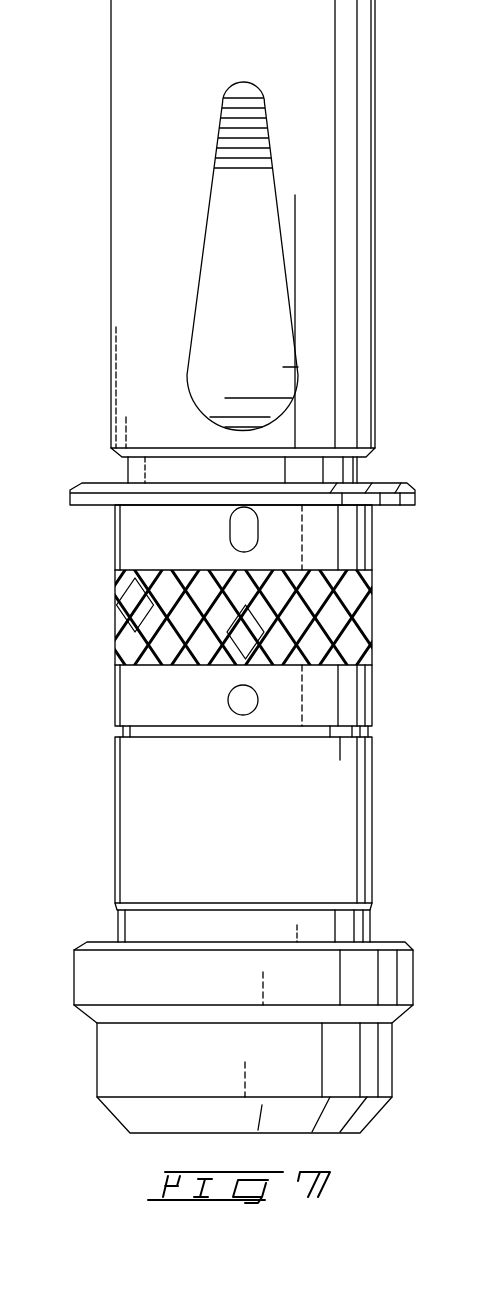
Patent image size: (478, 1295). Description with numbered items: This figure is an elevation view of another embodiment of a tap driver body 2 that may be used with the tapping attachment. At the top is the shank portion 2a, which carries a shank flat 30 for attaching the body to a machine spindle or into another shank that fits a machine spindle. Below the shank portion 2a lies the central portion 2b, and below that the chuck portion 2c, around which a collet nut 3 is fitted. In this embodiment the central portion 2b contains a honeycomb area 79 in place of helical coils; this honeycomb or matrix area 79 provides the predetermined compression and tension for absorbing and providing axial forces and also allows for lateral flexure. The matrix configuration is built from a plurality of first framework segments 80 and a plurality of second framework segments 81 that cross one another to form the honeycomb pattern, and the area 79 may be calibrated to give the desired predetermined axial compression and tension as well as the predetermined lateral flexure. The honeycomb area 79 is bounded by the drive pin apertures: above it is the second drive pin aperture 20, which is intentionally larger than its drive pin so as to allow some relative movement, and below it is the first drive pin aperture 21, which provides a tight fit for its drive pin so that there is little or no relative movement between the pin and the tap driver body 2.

The tap driver body 2 is at (242, 566).
The shank portion 2a is at (348, 110).
The central portion 2b is at (241, 615).
The chuck portion 2c is at (143, 858).
The collet nut 3 is at (395, 978).
The second drive pin aperture 20 is at (250, 530).
The first drive pin aperture 21 is at (250, 697).
The shank flat 30 is at (238, 302).
The honeycomb area 79 is at (385, 568).
The first framework segments 80 is at (160, 592).
The second framework segments 81 is at (247, 622).